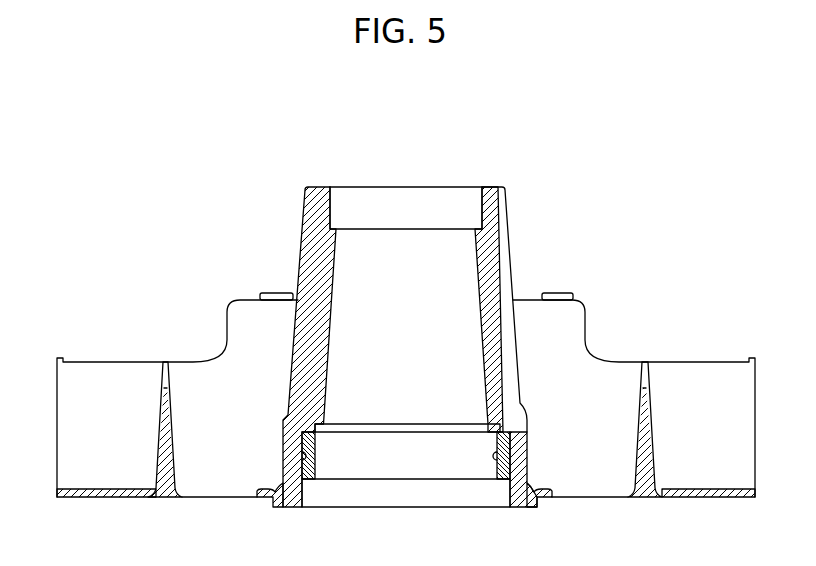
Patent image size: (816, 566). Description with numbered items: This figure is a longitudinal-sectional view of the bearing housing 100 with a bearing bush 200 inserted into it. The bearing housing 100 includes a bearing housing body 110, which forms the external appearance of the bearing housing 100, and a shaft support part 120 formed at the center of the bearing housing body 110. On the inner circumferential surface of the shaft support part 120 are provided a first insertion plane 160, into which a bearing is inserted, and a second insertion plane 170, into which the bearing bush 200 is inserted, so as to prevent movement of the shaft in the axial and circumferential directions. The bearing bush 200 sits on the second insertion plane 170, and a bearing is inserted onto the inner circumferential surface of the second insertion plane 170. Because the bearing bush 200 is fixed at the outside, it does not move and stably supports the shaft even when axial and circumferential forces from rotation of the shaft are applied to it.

The bearing housing 100 is at (435, 107).
The bearing housing body 110 is at (693, 378).
The shaft support part 120 is at (322, 197).
The first insertion plane 160 is at (473, 206).
The second insertion plane 170 is at (505, 478).
The bearing bush 200 is at (495, 466).